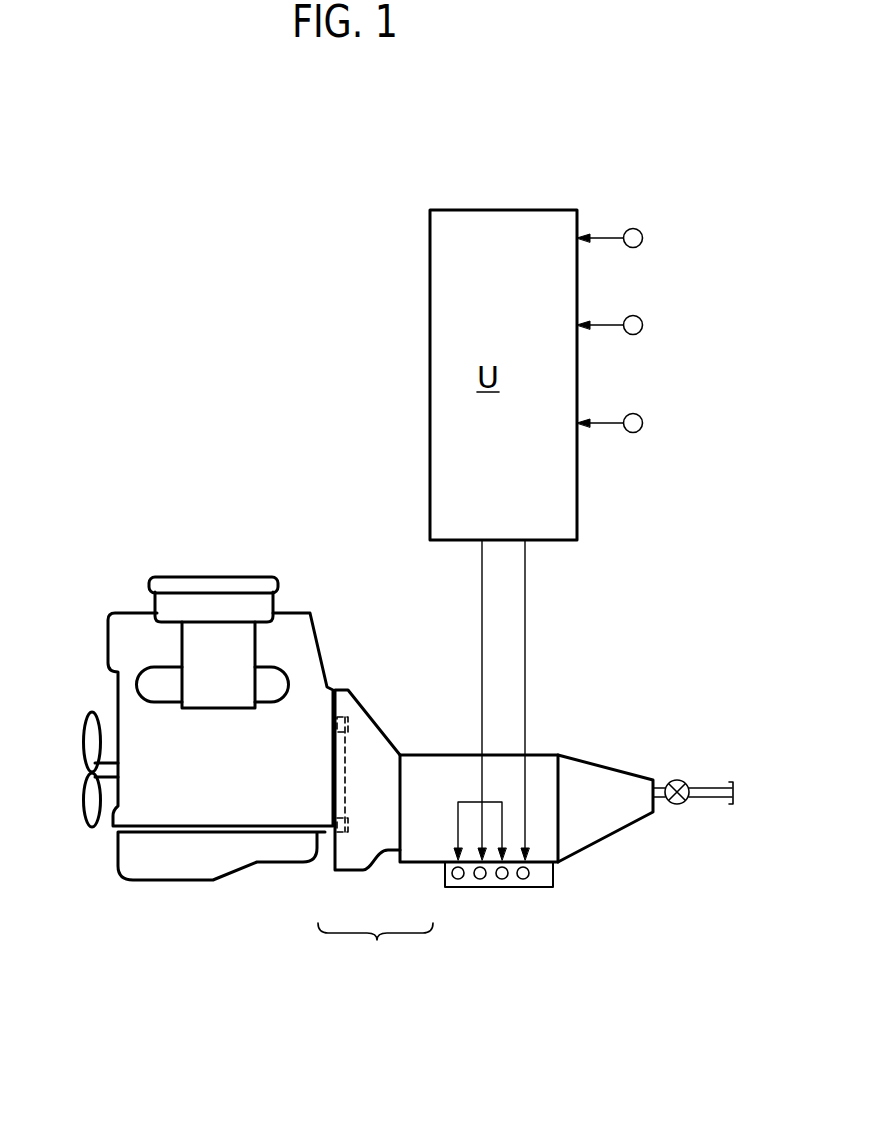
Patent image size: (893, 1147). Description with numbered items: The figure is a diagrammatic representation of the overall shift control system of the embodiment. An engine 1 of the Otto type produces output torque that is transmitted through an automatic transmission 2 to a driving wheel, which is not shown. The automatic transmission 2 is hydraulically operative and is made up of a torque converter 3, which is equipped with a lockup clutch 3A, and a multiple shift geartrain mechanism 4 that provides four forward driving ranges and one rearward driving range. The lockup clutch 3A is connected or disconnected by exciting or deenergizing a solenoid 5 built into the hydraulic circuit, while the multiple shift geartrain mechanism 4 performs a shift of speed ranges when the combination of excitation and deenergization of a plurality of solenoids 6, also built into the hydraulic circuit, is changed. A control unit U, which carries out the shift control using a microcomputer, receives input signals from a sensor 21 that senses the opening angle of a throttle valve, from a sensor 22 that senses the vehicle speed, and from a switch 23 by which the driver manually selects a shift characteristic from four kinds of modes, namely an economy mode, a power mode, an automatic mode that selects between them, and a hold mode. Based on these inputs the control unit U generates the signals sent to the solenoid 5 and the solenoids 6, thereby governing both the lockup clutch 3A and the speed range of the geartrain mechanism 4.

The engine 1 is at (203, 815).
The automatic transmission 2 is at (375, 950).
The torque converter 3 is at (343, 865).
The lockup clutch 3A is at (353, 727).
The multiple shift geartrain mechanism 4 is at (418, 852).
The solenoid 5 is at (523, 880).
The solenoids 6 is at (458, 880).
The sensor 21 is at (641, 231).
The sensor 22 is at (641, 318).
The switch 23 is at (641, 416).